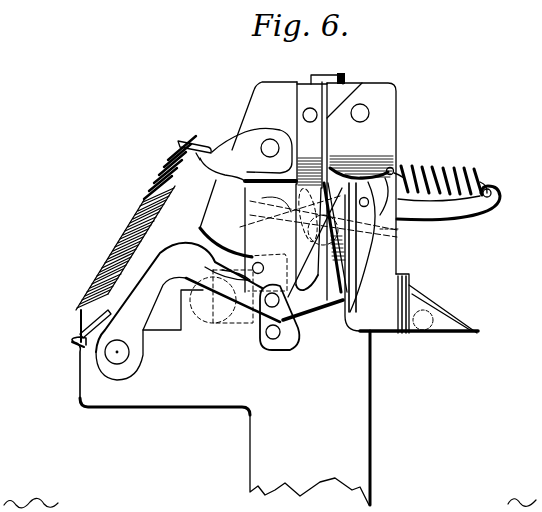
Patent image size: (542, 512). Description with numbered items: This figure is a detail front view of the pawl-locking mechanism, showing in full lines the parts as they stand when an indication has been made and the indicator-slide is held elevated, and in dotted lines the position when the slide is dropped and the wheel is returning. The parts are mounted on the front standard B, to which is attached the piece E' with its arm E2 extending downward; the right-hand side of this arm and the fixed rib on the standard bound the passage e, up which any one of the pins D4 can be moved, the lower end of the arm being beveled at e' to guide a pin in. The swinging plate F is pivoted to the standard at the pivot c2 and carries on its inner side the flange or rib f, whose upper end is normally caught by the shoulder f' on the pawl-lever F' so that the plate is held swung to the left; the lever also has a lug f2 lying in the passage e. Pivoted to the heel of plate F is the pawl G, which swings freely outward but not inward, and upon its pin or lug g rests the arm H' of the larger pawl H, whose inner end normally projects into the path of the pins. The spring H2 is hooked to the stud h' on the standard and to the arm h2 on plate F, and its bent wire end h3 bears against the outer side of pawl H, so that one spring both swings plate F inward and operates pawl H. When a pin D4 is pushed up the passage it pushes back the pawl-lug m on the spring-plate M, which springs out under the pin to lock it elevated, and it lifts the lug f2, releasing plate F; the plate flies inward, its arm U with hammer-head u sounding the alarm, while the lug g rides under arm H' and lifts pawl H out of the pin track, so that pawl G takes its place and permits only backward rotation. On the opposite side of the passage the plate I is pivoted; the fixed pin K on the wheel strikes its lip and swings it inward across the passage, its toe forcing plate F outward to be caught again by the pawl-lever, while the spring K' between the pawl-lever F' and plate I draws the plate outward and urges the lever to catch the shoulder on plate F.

The spring-plate M is at (338, 72).
The piece E' is at (295, 191).
The lug or pin f2 is at (372, 142).
The pivoted arm c2 is at (262, 150).
The arm h2 is at (224, 138).
The spring H2 is at (130, 222).
The arm E2 is at (250, 231).
The shoulder f' is at (297, 242).
The swinging plate F is at (267, 262).
The passage e is at (307, 262).
The beveled lower end e' is at (307, 232).
The pawl-lug m is at (351, 224).
The pins D4 is at (400, 231).
The spring K' is at (439, 168).
The pawl-lever F' is at (448, 216).
The plate I is at (382, 277).
The fixed pin K is at (443, 325).
The front standard B is at (310, 418).
The larger pawl H is at (188, 311).
The ball or hammer-head u is at (174, 312).
The arm U is at (258, 314).
The arm H' is at (226, 311).
The pin or lug g is at (266, 335).
The pawl G is at (281, 330).
The flange or rib f is at (313, 321).
The end of spring wire h3 is at (78, 320).
The projection or stud h' is at (63, 355).